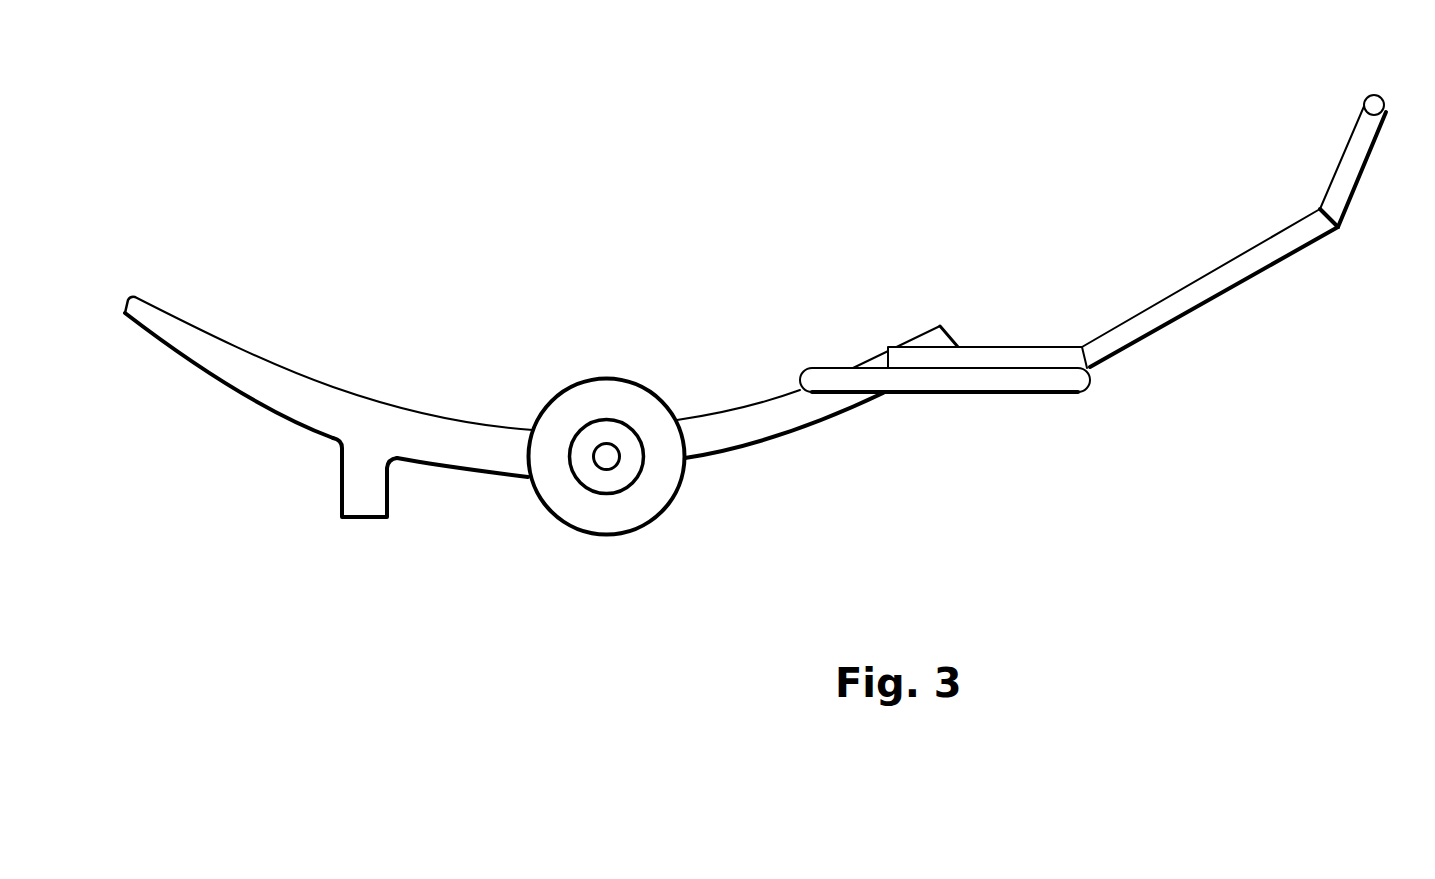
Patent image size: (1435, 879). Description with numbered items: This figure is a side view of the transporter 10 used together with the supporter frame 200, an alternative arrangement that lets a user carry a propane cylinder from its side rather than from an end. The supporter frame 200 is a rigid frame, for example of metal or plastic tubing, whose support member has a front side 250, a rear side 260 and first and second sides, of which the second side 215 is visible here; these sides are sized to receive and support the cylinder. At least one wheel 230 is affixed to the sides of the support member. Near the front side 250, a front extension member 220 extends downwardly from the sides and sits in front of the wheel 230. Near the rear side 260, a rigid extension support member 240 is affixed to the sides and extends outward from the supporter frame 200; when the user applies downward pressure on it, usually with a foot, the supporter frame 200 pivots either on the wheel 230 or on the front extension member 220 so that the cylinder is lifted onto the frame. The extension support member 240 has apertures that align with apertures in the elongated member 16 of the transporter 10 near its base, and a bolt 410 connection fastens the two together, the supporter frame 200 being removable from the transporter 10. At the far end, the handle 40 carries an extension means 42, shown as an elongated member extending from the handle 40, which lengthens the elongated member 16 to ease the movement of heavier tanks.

The transporter 10 is at (1300, 347).
The elongated member 16 is at (1175, 322).
The handle 40 is at (1348, 207).
The extension means 42 is at (1382, 100).
The supporter frame 200 is at (240, 427).
The second side 215 is at (460, 474).
The front extension member 220 is at (342, 482).
The wheel 230 is at (648, 520).
The extension support member 240 is at (1010, 393).
The front side 250 is at (134, 296).
The rear side 260 is at (953, 337).
The bolt 410 is at (963, 354).